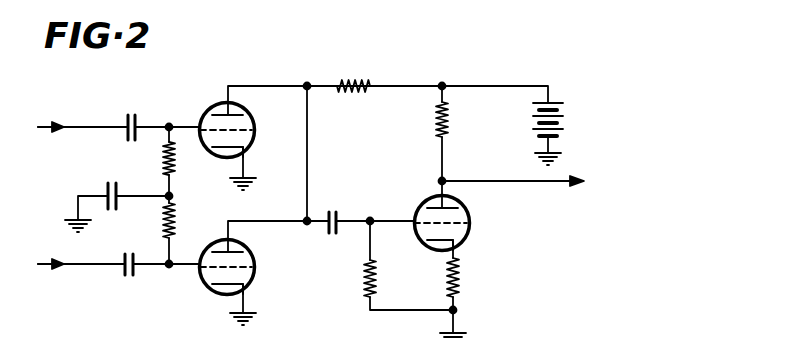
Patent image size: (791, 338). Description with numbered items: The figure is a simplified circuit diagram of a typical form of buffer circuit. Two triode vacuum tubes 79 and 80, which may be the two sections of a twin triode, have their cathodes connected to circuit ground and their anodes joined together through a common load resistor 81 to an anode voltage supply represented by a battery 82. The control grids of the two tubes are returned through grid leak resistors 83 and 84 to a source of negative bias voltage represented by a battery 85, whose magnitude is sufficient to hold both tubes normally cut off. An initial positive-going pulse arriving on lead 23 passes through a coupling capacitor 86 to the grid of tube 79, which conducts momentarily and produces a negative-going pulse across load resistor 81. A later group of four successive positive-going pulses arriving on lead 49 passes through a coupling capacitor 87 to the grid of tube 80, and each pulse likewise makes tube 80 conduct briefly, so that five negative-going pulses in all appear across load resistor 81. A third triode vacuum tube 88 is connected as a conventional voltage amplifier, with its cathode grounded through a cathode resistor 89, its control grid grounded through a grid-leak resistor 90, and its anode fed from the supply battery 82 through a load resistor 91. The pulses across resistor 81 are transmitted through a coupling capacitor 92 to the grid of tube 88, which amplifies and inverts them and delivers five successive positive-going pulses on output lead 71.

The lead 49 is at (92, 126).
The lead 23 is at (86, 268).
The coupling capacitor 87 is at (135, 115).
The coupling capacitor 86 is at (124, 273).
The battery 85 is at (117, 180).
The grid leak resistor 84 is at (162, 166).
The grid leak resistor 83 is at (160, 227).
The triode vacuum tube 80 is at (208, 104).
The triode vacuum tube 79 is at (212, 241).
The triode vacuum tube 88 is at (420, 200).
The common load resistor 81 is at (368, 76).
The load resistor 91 is at (435, 128).
The battery 82 is at (530, 121).
The lead 71 is at (500, 182).
The coupling capacitor 92 is at (337, 211).
The grid-leak resistor 90 is at (361, 286).
The cathode resistor 89 is at (448, 282).